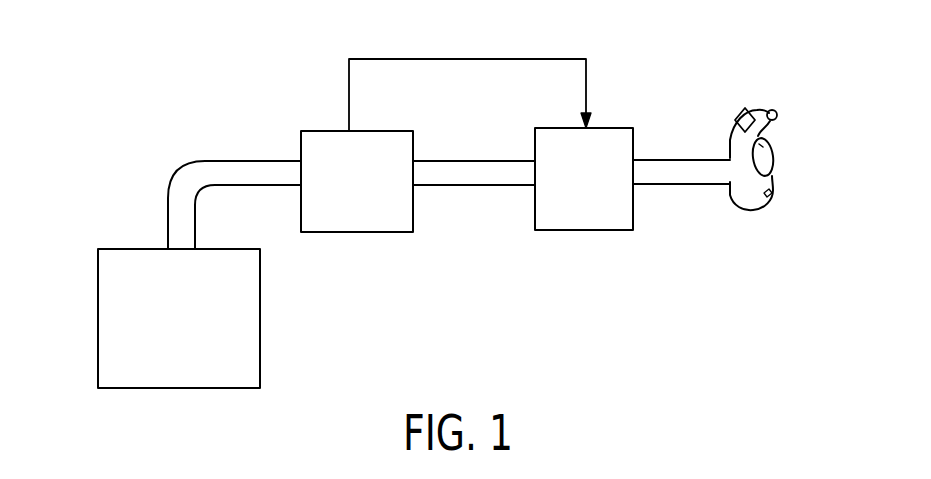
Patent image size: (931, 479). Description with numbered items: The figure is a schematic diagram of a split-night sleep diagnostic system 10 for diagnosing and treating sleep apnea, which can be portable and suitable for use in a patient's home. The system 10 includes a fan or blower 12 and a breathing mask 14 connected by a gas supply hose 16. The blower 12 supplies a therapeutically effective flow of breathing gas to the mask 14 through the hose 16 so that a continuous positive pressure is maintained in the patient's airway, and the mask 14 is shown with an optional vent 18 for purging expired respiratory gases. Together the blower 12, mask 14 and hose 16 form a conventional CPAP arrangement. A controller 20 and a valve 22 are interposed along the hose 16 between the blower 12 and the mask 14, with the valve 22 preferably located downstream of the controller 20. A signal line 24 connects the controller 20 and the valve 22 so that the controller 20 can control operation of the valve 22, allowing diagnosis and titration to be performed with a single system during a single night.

The split-night sleep diagnostic system 10 is at (558, 285).
The fan or blower 12 is at (97, 333).
The breathing mask 14 is at (776, 157).
The gas supply hose 16 is at (196, 162).
The vent 18 is at (740, 110).
The controller 20 is at (323, 130).
The valve 22 is at (567, 127).
The signal line 24 is at (445, 58).